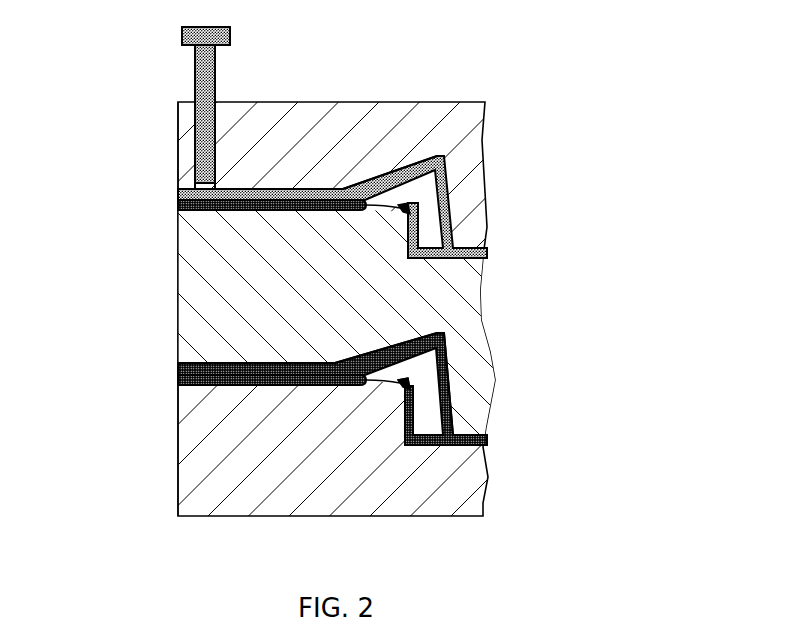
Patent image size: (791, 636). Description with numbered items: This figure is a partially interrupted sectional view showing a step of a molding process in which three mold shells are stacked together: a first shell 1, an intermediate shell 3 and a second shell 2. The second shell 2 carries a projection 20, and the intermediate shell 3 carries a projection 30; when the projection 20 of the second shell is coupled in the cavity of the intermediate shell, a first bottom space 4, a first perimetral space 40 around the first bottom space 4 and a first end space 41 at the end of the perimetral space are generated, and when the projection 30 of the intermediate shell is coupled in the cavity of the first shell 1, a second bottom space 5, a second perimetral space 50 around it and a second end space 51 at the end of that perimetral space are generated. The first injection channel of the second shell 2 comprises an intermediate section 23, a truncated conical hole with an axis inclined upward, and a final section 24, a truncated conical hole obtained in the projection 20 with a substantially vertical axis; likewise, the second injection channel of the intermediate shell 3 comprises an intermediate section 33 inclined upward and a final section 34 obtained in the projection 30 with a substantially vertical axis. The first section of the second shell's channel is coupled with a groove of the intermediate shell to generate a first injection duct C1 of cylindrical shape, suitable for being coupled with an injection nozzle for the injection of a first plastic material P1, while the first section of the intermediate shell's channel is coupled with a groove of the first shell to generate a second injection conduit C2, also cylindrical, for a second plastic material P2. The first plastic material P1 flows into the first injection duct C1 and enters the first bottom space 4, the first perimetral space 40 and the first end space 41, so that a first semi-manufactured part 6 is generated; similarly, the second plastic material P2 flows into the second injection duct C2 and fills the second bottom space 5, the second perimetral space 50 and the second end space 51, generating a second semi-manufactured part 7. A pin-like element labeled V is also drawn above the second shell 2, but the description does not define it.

The first shell 1 is at (195, 474).
The second shell 2 is at (312, 120).
The intermediate shell 3 is at (195, 292).
The first bottom space 4 is at (468, 273).
The second bottom space 5 is at (457, 445).
The first semi-manufactured part 6 is at (502, 260).
The second semi-manufactured part 7 is at (505, 445).
The projection of the second shell 20 is at (475, 231).
The intermediate section 23 is at (387, 171).
The final section 24 is at (483, 178).
The projection of the intermediate shell 30 is at (473, 403).
The intermediate section 33 is at (390, 355).
The final section 34 is at (450, 373).
The first perimetral space 40 is at (450, 292).
The first end space 41 is at (400, 212).
The second perimetral space 50 is at (406, 430).
The second end space 51 is at (398, 388).
The valve pin V is at (200, 74).
The first plastic material P1 is at (156, 207).
The second plastic material P2 is at (156, 378).
The first injection duct C1 is at (260, 160).
The second injection duct C2 is at (200, 418).